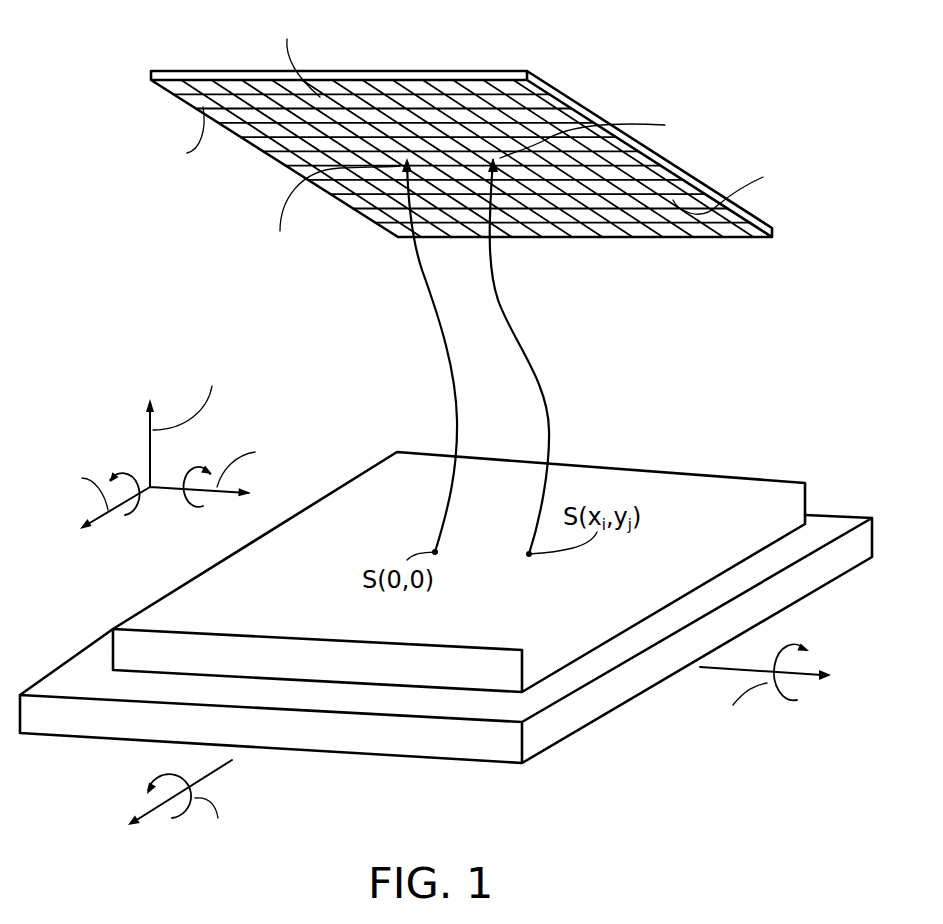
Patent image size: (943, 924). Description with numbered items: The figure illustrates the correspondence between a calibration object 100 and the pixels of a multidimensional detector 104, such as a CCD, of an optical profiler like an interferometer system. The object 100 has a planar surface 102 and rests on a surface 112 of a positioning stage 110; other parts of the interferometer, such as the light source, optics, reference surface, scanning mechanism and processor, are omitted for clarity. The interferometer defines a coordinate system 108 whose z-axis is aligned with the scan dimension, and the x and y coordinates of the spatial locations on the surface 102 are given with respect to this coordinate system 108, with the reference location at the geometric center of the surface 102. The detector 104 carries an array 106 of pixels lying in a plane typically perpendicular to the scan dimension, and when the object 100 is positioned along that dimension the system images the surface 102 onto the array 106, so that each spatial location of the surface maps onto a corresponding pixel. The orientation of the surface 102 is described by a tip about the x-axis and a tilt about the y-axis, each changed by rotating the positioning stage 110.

The calibration object 100 is at (446, 630).
The planar surface 102 is at (593, 480).
The multidimensional detector 104 is at (530, 60).
The array of pixels 106 is at (453, 118).
The coordinate system 108 is at (108, 437).
The positioning stage 110 is at (391, 736).
The surface of positioning stage 112 is at (550, 688).